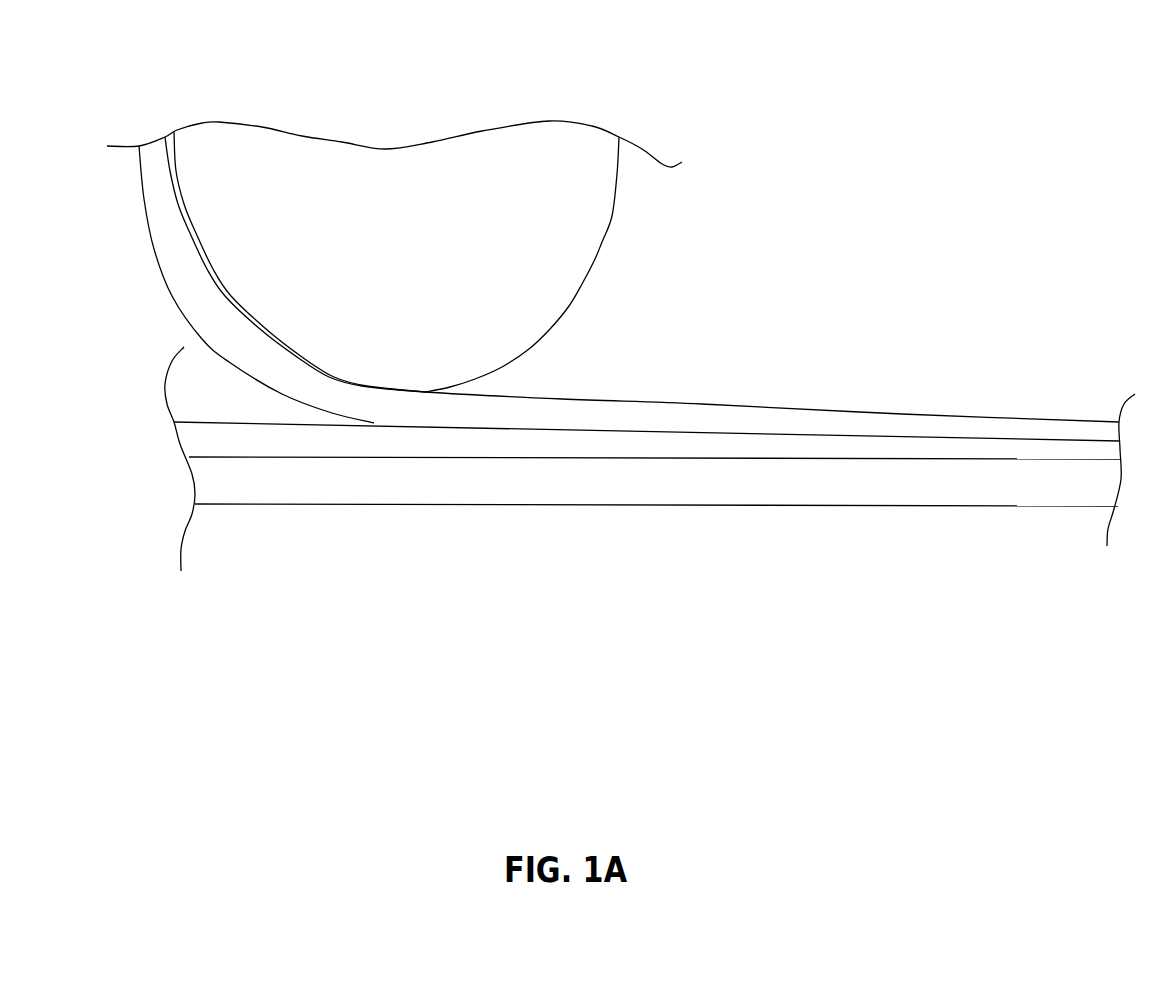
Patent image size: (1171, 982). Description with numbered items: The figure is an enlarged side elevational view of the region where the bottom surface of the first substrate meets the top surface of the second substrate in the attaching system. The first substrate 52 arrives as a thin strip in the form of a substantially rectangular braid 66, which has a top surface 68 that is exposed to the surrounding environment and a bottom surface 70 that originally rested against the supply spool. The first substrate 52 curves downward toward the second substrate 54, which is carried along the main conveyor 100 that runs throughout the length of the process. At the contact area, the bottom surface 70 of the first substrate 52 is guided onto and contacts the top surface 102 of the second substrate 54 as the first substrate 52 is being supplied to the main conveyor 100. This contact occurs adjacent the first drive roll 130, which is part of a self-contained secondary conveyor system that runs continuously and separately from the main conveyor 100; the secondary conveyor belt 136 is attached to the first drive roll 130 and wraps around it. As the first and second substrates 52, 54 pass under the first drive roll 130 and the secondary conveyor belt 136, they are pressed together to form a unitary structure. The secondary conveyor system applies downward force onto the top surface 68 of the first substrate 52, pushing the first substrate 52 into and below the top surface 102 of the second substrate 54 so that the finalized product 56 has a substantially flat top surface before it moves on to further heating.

The first substrate 52 is at (155, 198).
The second substrate 54 is at (197, 445).
The finalized product 56 is at (1119, 423).
The braid 66 is at (187, 292).
The top surface 68 is at (170, 140).
The bottom surface 70 is at (152, 255).
The main conveyor 100 is at (302, 487).
The top surface 102 is at (372, 425).
The first drive roll 130 is at (573, 259).
The secondary conveyor belt 136 is at (174, 152).